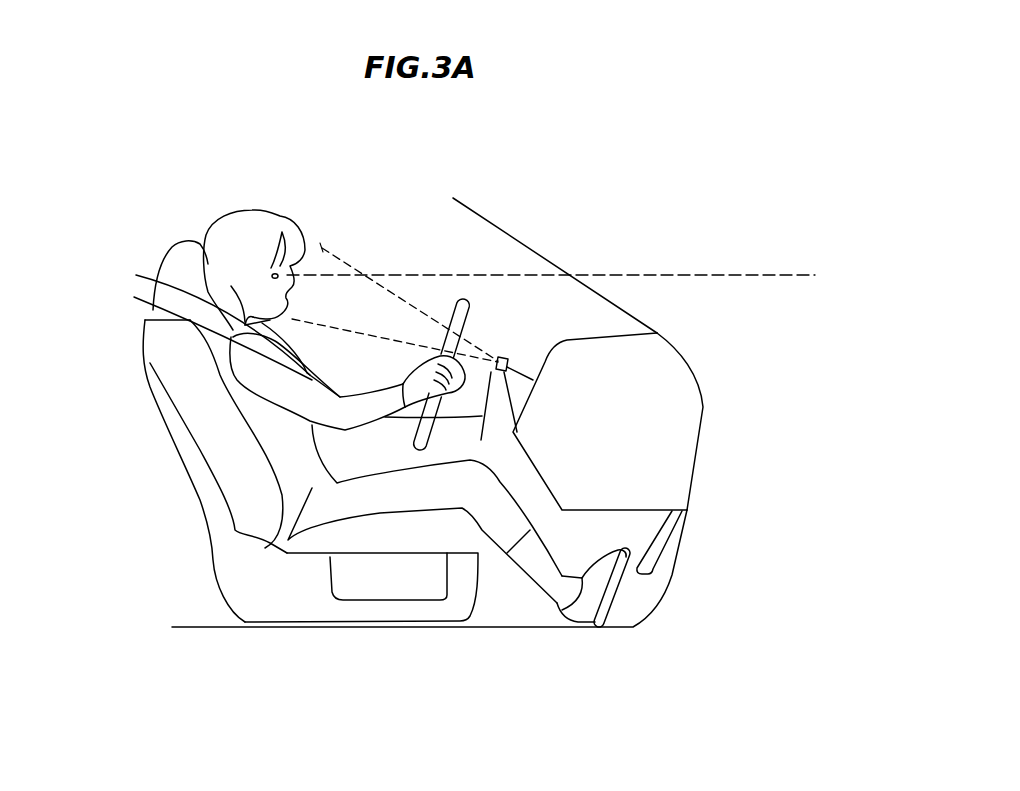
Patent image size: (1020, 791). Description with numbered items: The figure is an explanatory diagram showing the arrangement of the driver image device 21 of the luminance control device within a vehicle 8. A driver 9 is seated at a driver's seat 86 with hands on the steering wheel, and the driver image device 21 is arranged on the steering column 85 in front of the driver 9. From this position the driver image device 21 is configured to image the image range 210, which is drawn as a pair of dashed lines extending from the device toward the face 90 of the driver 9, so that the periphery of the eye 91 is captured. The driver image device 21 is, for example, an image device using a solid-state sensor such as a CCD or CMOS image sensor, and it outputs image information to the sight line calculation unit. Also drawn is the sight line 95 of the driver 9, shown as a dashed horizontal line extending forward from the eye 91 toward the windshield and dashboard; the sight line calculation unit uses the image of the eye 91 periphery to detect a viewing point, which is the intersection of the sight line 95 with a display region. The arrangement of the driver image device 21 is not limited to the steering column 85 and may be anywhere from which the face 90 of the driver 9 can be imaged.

The vehicle 8 is at (766, 120).
The driver 9 is at (210, 230).
The face 90 is at (277, 297).
The eye 91 is at (272, 271).
The image range 210 is at (321, 245).
The sight line 95 is at (765, 275).
The driver's seat 86 is at (188, 477).
The steering column 85 is at (490, 413).
The driver image device 21 is at (506, 373).